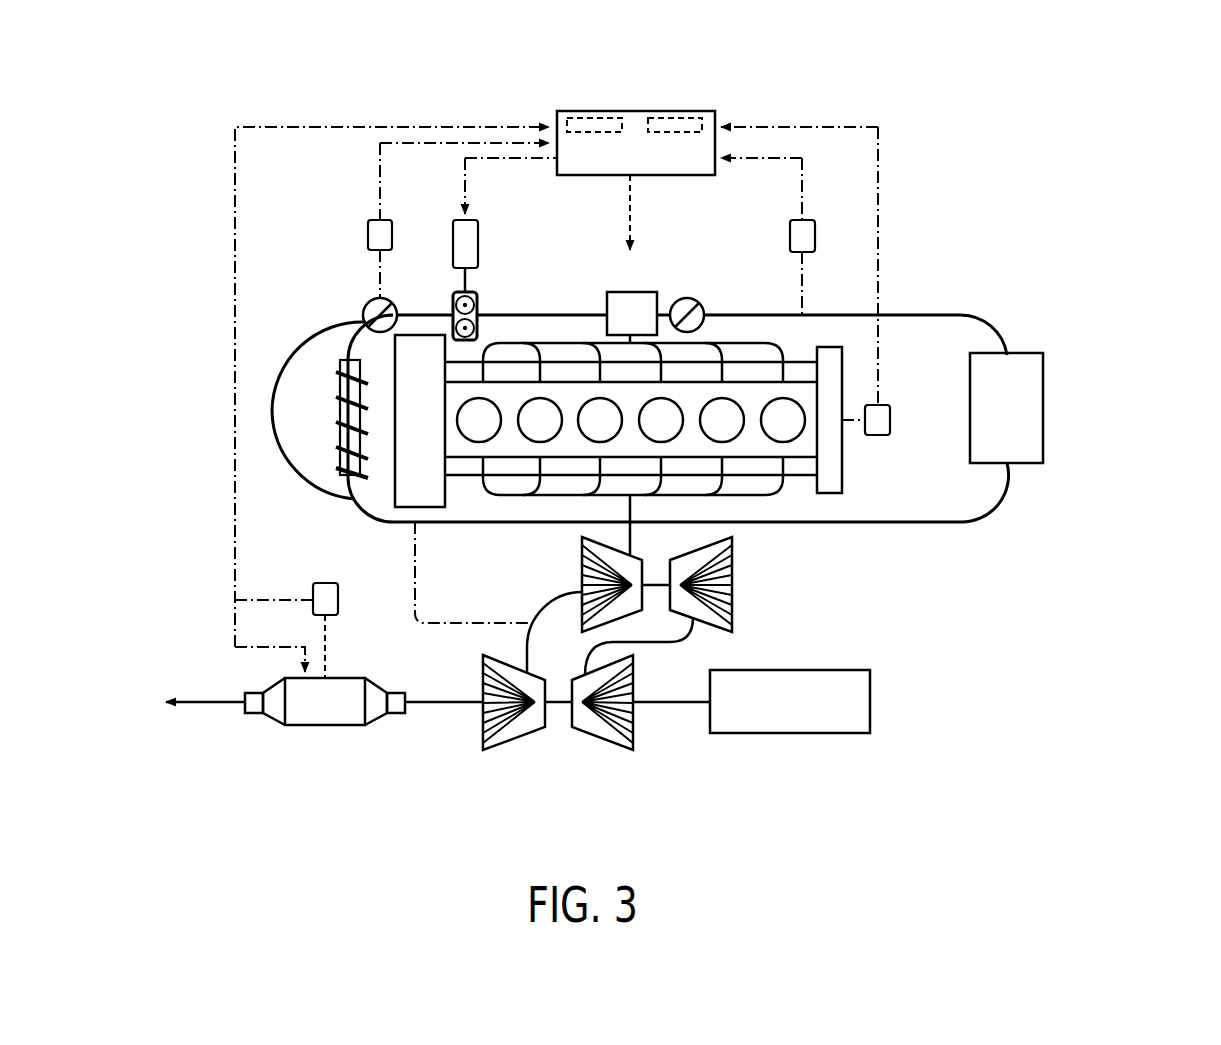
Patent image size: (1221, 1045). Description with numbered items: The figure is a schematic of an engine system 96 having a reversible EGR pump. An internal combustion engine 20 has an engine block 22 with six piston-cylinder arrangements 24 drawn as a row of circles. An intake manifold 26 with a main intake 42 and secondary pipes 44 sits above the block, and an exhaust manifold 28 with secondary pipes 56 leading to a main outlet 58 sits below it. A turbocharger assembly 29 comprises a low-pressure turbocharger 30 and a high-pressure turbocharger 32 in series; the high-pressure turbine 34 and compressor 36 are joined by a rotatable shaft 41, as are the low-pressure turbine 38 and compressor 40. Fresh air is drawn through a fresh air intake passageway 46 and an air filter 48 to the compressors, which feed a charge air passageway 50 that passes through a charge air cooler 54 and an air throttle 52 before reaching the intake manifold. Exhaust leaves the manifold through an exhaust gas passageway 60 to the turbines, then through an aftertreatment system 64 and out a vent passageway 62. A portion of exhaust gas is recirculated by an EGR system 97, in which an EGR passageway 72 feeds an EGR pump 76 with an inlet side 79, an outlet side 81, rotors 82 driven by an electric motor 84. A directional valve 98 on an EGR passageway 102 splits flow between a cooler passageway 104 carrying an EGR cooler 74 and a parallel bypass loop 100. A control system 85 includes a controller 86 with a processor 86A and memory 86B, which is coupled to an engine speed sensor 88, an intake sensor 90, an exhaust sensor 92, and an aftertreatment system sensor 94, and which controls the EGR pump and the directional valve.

The internal combustion engine 20 is at (645, 440).
The engine block 22 is at (843, 458).
The piston-cylinder arrangements 24 is at (467, 432).
The intake manifold 26 is at (588, 332).
The exhaust manifold 28 is at (508, 510).
The turbocharger assembly 29 is at (556, 733).
The low-pressure turbocharger 30 is at (308, 748).
The high-pressure turbocharger 32 is at (654, 636).
The high-pressure turbine 34 is at (582, 553).
The high-pressure compressor 36 is at (735, 564).
The low-pressure turbine 38 is at (485, 677).
The low-pressure compressor 40 is at (634, 672).
The rotatable shaft 41 is at (657, 592).
The main intake 42 is at (633, 343).
The secondary pipes 44 is at (760, 347).
The fresh air intake passageway 46 is at (670, 708).
The air filter 48 is at (795, 733).
The charge air passageway 50 is at (925, 315).
The air throttle 52 is at (686, 298).
The charge air cooler 54 is at (1043, 392).
The secondary pipes 56 is at (767, 492).
The main outlet 58 is at (630, 507).
The exhaust gas passageway 60 is at (634, 550).
The vent passageway 62 is at (213, 705).
The aftertreatment system 64 is at (325, 727).
The EGR passageway 72 is at (545, 314).
The EGR cooler 74 is at (338, 452).
The EGR pump 76 is at (481, 266).
The inlet side 79 is at (443, 297).
The outlet side 81 is at (490, 295).
The rotors 82 is at (478, 288).
The electric motor 84 is at (453, 240).
The control system 85 is at (791, 94).
The controller 86 is at (672, 175).
The processor 86A is at (600, 117).
The memory 86B is at (683, 117).
The engine speed sensor 88 is at (882, 406).
The sensor 90 is at (815, 236).
The sensor 92 is at (368, 233).
The aftertreatment system sensor 94 is at (338, 585).
The engine system 96 is at (1102, 137).
The EGR system 97 is at (272, 345).
The directional valve 98 is at (367, 306).
The bypass loop 100 is at (292, 470).
The EGR passageway 102 is at (403, 526).
The cooler passageway 104 is at (353, 342).